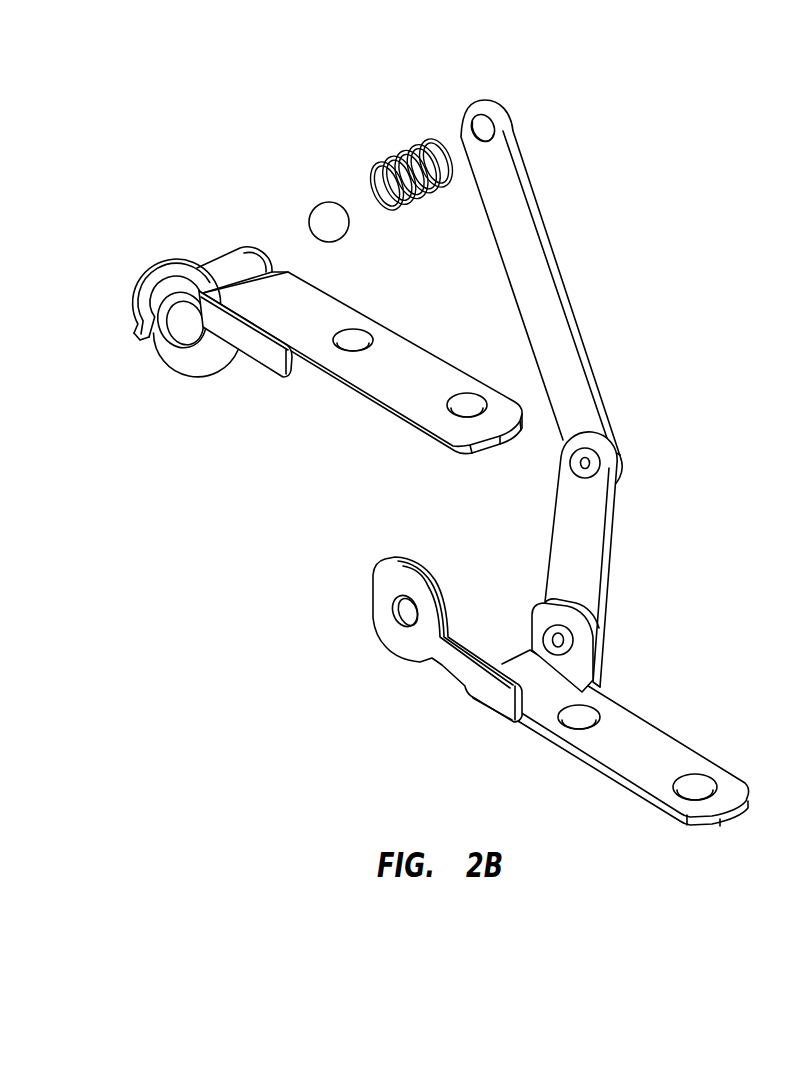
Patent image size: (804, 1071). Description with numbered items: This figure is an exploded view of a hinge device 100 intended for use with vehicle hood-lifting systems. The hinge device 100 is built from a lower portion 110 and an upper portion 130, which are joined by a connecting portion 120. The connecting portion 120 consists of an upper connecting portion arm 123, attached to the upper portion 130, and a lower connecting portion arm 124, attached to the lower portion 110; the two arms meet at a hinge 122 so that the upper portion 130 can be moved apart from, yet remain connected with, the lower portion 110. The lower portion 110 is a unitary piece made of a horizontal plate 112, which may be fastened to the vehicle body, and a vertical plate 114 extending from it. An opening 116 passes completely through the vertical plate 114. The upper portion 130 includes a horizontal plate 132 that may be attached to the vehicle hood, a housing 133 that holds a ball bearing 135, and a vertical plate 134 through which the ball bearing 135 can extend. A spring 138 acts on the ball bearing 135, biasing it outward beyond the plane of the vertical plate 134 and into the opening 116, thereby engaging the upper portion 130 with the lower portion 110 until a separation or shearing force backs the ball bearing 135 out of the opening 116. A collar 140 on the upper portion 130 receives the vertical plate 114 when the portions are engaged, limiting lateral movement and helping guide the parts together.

The hinge device 100 is at (431, 89).
The lower portion 110 is at (500, 758).
The horizontal plate 112 is at (650, 740).
The vertical plate 114 is at (378, 577).
The opening 116 is at (397, 619).
The connecting portion 120 is at (620, 361).
The hinge 122 is at (635, 462).
The upper connecting portion arm 123 is at (538, 277).
The lower connecting portion arm 124 is at (588, 555).
The upper portion 130 is at (160, 382).
The horizontal plate 132 is at (397, 389).
The housing 133 is at (228, 265).
The vertical plate 134 is at (203, 373).
The ball bearing 135 is at (326, 221).
The spring 138 is at (410, 147).
The collar 140 is at (136, 285).